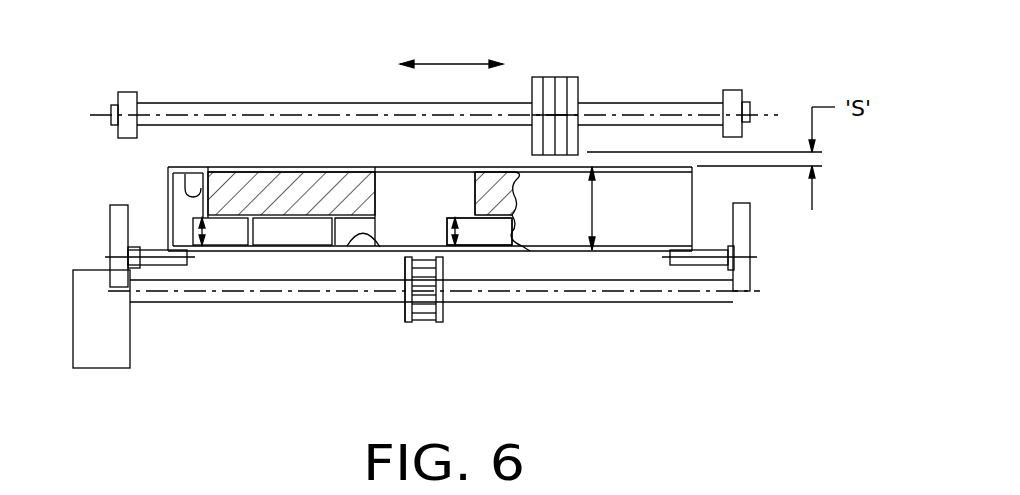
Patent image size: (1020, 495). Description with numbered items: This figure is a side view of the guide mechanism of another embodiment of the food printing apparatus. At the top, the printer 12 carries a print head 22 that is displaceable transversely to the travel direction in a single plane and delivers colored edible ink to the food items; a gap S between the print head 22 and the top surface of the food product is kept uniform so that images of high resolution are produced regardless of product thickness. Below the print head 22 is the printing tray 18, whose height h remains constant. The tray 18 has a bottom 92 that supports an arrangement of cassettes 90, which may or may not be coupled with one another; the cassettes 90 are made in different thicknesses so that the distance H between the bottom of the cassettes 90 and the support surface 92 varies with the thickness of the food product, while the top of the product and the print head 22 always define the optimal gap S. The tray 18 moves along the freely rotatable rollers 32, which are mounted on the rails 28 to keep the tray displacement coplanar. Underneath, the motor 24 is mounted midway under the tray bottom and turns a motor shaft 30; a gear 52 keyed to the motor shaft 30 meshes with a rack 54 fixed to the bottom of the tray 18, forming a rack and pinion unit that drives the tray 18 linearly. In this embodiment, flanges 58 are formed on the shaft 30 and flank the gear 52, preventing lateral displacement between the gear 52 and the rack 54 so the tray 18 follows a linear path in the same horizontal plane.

The printer 12 is at (798, 63).
The print head 22 is at (556, 85).
The printing tray 18 is at (168, 200).
The cassettes 90 is at (191, 168).
The bottom of the tray 92 is at (347, 248).
The gear 52 is at (428, 322).
The flanges 58 is at (404, 318).
The rack 54 is at (470, 253).
The motor shaft 30 is at (602, 291).
The rails 28 is at (753, 280).
The rollers 32 is at (150, 260).
The motor 24 is at (102, 353).